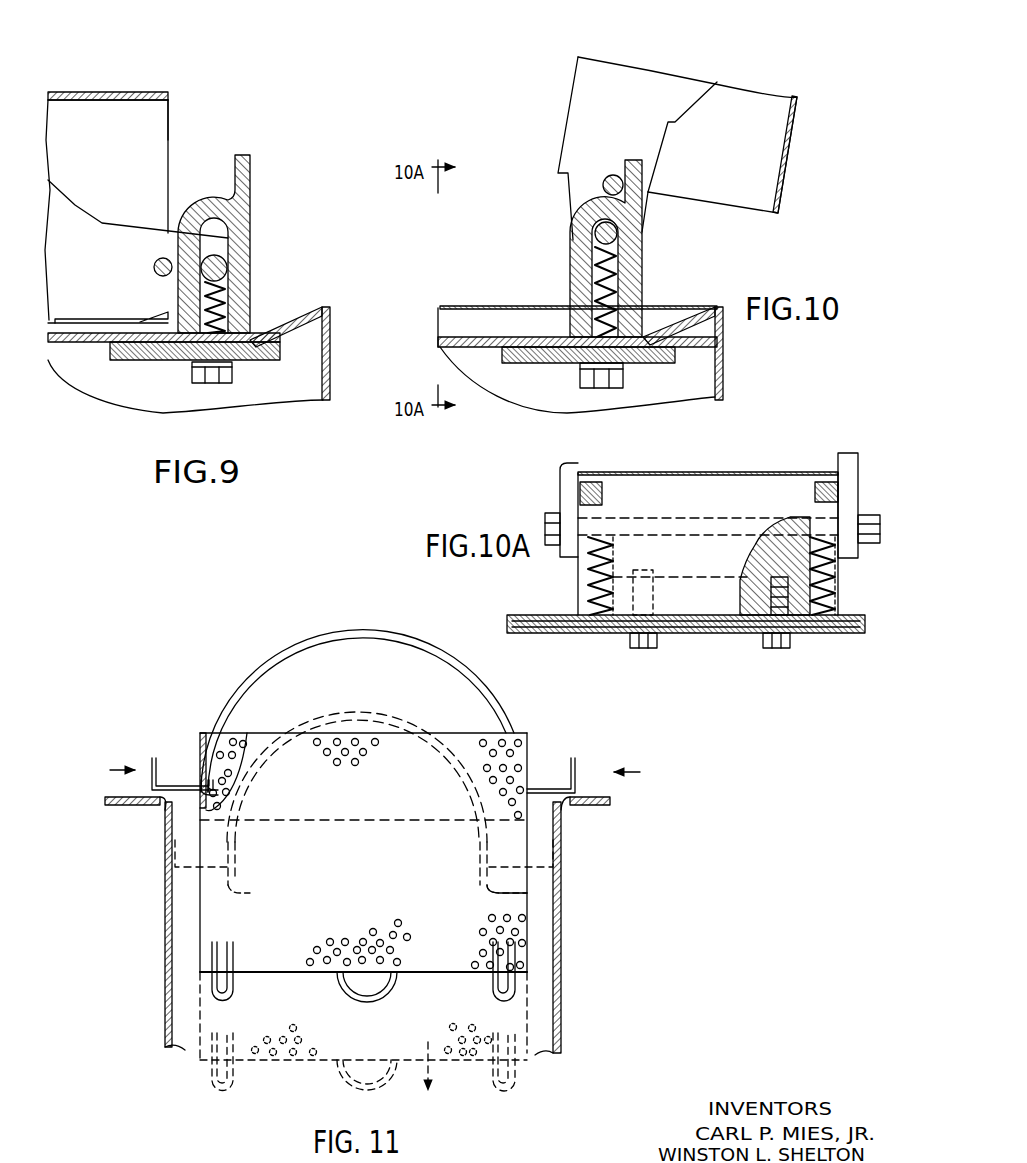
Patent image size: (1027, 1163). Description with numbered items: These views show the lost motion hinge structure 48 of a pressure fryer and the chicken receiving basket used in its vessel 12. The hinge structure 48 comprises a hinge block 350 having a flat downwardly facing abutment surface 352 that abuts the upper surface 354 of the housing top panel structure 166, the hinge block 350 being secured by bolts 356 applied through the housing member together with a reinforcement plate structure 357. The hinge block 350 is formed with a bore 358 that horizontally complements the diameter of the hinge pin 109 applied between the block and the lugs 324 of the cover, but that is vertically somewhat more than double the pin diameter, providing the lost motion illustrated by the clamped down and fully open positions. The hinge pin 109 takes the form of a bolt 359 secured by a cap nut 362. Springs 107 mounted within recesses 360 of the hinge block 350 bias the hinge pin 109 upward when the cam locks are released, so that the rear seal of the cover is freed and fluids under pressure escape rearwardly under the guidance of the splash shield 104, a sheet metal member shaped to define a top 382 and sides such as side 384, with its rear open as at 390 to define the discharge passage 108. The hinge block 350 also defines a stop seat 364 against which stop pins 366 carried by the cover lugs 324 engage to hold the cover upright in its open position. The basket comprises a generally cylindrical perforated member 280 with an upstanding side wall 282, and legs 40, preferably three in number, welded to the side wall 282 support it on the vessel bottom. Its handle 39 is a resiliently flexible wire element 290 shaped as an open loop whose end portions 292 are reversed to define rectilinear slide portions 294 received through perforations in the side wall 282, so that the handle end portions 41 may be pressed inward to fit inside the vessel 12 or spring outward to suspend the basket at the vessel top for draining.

In FIG. 11, the vessel 12 is at (165, 944).
In FIG. 11, the handle 39 is at (397, 632).
In FIG. 11, the legs 40 is at (237, 963).
In FIG. 11, the end portions 41 is at (150, 760).
In FIG. 9, the hinge structure 48 is at (299, 210).
In FIG. 10, the hinge structure 48 is at (722, 283).
In FIG. 9, the splash shield 104 is at (118, 88).
In FIG. 10, the splash shield 104 is at (797, 143).
In FIG. 9, the springs 107 is at (230, 303).
In FIG. 10A, the springs 107 is at (603, 615).
In FIG. 9, the discharge passage 108 is at (195, 101).
In FIG. 9, the hinge pin 109 is at (233, 263).
In FIG. 10, the hinge pin 109 is at (620, 230).
In FIG. 10A, the hinge pin 109 is at (541, 529).
In FIG. 10, the top panel structure 166 is at (457, 338).
In FIG. 11, the cylindrical member 280 is at (530, 747).
In FIG. 11, the side wall 282 is at (530, 893).
In FIG. 11, the wire element 290 is at (268, 668).
In FIG. 11, the end portions 292 is at (140, 802).
In FIG. 11, the slide portions 294 is at (178, 787).
In FIG. 9, the lugs 324 is at (142, 243).
In FIG. 10, the lugs 324 is at (648, 172).
In FIG. 10A, the lugs 324 is at (563, 473).
In FIG. 10, the hinge block 350 is at (637, 260).
In FIG. 10A, the hinge block 350 is at (582, 567).
In FIG. 10, the abutment surface 352 is at (560, 343).
In FIG. 10, the upper surface 354 is at (480, 337).
In FIG. 10, the bolts 356 is at (583, 377).
In FIG. 10A, the bolts 356 is at (640, 648).
In FIG. 10A, the reinforcement plate structure 357 is at (845, 636).
In FIG. 9, the bore 358 is at (223, 227).
In FIG. 10, the bore 358 is at (580, 257).
In FIG. 10A, the bore 358 is at (788, 547).
In FIG. 10A, the bolt 359 is at (822, 543).
In FIG. 9, the recesses 360 is at (247, 342).
In FIG. 10A, the recesses 360 is at (588, 597).
In FIG. 10A, the cap nut 362 is at (868, 557).
In FIG. 10, the stop seat 364 is at (598, 181).
In FIG. 10A, the stop seat 364 is at (702, 490).
In FIG. 10, the stop pins 366 is at (612, 175).
In FIG. 10A, the stop pins 366 is at (600, 490).
In FIG. 9, the top 382 is at (155, 92).
In FIG. 9, the side 384 is at (83, 120).
In FIG. 9, the open rear 390 is at (170, 137).